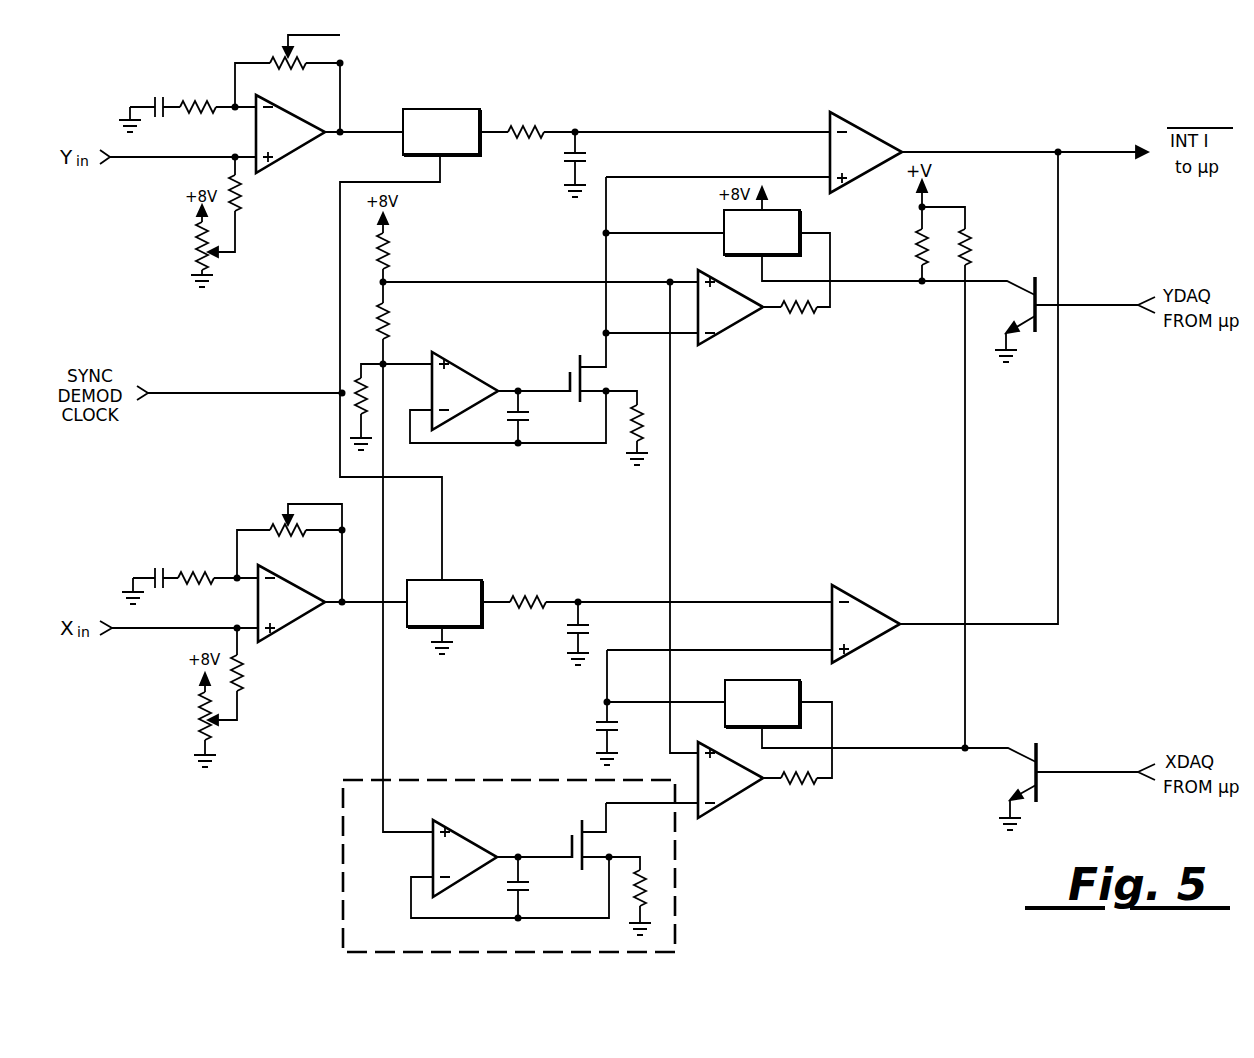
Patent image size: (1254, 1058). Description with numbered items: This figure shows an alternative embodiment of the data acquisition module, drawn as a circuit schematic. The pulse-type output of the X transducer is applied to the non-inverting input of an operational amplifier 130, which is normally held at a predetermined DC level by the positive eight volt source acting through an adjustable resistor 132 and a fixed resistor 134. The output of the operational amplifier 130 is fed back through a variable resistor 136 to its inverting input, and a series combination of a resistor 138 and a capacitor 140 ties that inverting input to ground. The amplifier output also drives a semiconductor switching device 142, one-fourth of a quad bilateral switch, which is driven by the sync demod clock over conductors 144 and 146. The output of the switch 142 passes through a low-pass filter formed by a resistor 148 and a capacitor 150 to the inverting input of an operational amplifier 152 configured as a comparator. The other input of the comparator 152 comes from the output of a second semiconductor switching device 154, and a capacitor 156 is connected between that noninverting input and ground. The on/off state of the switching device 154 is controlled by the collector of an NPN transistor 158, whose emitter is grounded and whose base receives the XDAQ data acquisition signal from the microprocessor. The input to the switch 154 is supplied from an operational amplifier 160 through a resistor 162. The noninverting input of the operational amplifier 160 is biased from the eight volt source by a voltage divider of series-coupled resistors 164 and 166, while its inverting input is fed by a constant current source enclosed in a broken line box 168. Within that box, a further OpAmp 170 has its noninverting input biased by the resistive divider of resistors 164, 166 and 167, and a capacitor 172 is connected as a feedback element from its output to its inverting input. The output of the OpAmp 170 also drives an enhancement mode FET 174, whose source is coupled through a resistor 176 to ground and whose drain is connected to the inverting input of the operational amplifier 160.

The operational amplifier 130 is at (290, 628).
The adjustable resistor 132 is at (206, 724).
The fixed resistor 134 is at (246, 684).
The variable resistor 136 is at (283, 522).
The resistor 138 is at (196, 572).
The capacitor 140 is at (155, 568).
The semiconductor switching device 142 is at (458, 580).
The conductor 144 is at (175, 392).
The conductor 146 is at (340, 352).
The resistor 148 is at (528, 600).
The capacitor 150 is at (568, 628).
The operational amplifier 152 is at (866, 602).
The semiconductor switching device 154 is at (800, 688).
The capacitor 156 is at (596, 727).
The NPN transistor 158 is at (1025, 772).
The operational amplifier 160 is at (718, 806).
The resistor 162 is at (793, 783).
The resistor 164 is at (392, 250).
The resistor 166 is at (394, 322).
The resistor 167 is at (356, 420).
The broken line box 168 is at (343, 832).
The OpAmp 170 is at (458, 832).
The capacitor 172 is at (530, 885).
The enhancement mode FET 174 is at (578, 835).
The resistor 176 is at (646, 888).